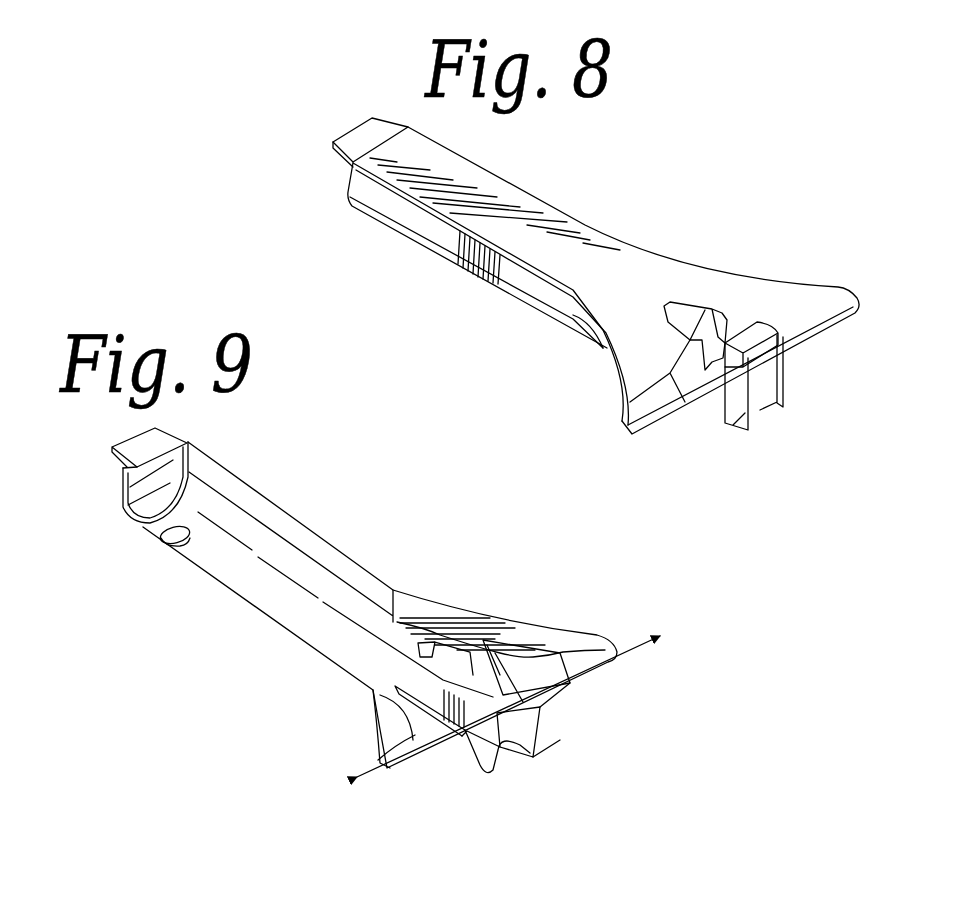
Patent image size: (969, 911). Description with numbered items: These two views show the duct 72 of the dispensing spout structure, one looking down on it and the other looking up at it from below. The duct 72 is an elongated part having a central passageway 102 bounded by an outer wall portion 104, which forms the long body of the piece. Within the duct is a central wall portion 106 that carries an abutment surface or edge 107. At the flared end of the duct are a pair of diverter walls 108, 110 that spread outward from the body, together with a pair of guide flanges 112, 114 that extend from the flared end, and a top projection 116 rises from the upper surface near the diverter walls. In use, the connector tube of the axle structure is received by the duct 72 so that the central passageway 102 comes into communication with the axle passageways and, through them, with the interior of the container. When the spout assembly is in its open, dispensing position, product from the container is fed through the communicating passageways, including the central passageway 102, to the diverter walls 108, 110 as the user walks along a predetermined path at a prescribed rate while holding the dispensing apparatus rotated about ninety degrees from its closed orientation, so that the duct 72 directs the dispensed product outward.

In FIG. 8, the duct 72 is at (612, 316).
In FIG. 9, the duct 72 is at (373, 649).
In FIG. 9, the central passageway 102 is at (137, 488).
In FIG. 9, the outer wall portion 104 is at (248, 537).
In FIG. 8, the central wall portion 106 is at (695, 336).
In FIG. 9, the central wall portion 106 is at (467, 717).
In FIG. 9, the abutment surface or edge 107 is at (440, 717).
In FIG. 9, the diverter wall 108 is at (410, 760).
In FIG. 9, the diverter wall 110 is at (547, 675).
In FIG. 8, the guide flange 112 is at (745, 416).
In FIG. 9, the guide flange 112 is at (523, 723).
In FIG. 8, the guide flange 114 is at (787, 400).
In FIG. 9, the guide flange 114 is at (487, 747).
In FIG. 8, the top projection 116 is at (753, 327).